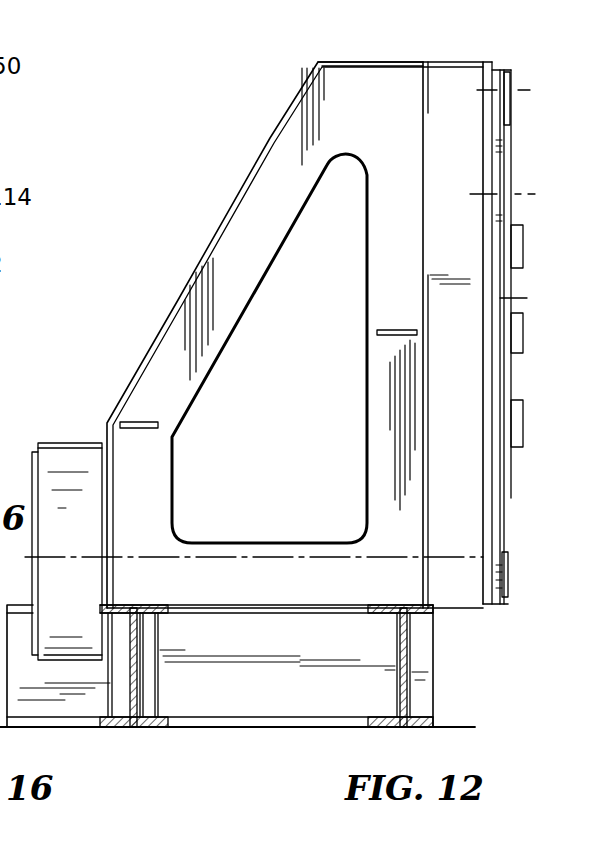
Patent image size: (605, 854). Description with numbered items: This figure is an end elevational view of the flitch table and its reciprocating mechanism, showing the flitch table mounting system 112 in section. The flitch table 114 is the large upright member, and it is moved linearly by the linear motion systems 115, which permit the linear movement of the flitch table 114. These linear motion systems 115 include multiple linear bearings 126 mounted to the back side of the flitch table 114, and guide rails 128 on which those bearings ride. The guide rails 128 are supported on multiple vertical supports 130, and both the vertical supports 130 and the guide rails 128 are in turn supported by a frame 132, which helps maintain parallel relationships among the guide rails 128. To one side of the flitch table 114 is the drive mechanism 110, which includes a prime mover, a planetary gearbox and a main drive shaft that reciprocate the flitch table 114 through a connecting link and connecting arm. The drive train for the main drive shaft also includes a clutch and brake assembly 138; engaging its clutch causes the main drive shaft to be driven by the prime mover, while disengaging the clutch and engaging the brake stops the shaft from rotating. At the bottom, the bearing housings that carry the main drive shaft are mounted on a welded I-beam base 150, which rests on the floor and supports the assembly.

The drive mechanism 110 is at (51, 497).
The flitch table mounting system 112 is at (192, 146).
The flitch table 114 is at (538, 324).
The linear motion systems 115 is at (528, 66).
The linear bearings 126 is at (520, 175).
The guide rails 128 is at (499, 140).
The vertical supports 130 is at (457, 100).
The frame 132 is at (368, 95).
The clutch and brake assembly 138 is at (50, 430).
The welded I-beam base 150 is at (268, 675).